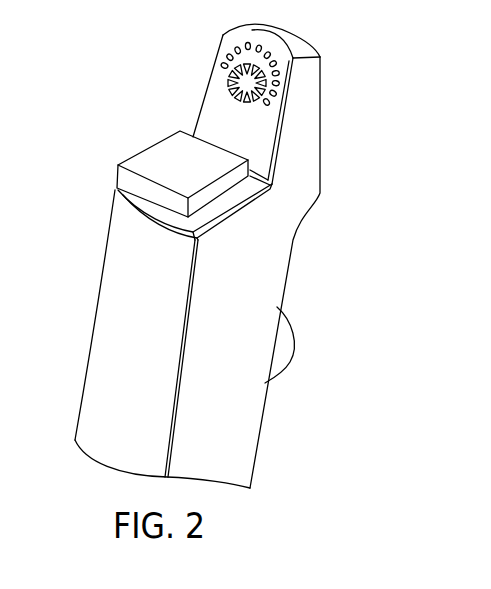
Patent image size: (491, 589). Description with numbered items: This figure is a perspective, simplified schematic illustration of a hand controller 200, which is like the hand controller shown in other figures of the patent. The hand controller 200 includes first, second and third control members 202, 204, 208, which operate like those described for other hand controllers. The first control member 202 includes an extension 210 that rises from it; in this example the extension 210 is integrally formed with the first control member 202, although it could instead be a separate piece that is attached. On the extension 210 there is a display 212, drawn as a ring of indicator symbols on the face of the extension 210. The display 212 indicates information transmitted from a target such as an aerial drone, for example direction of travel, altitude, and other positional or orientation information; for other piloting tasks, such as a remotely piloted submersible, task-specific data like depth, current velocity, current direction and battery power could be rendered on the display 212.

The hand controller 200 is at (245, 256).
The first control member 202 is at (108, 363).
The second control member 204 is at (160, 162).
The third control member 208 is at (285, 340).
The extension 210 is at (320, 117).
The display 212 is at (212, 87).